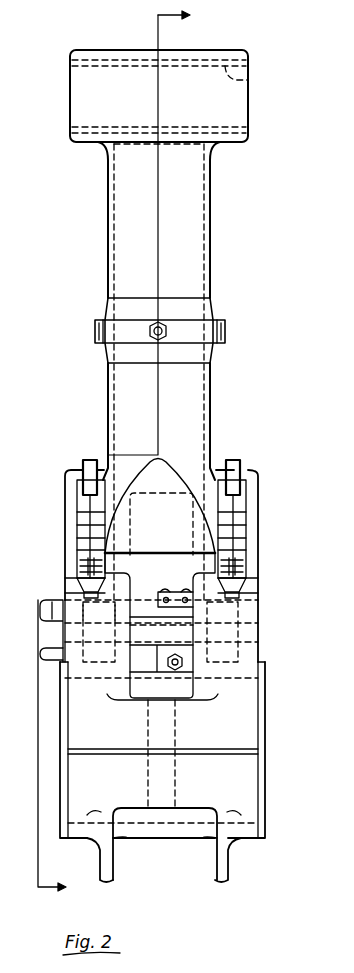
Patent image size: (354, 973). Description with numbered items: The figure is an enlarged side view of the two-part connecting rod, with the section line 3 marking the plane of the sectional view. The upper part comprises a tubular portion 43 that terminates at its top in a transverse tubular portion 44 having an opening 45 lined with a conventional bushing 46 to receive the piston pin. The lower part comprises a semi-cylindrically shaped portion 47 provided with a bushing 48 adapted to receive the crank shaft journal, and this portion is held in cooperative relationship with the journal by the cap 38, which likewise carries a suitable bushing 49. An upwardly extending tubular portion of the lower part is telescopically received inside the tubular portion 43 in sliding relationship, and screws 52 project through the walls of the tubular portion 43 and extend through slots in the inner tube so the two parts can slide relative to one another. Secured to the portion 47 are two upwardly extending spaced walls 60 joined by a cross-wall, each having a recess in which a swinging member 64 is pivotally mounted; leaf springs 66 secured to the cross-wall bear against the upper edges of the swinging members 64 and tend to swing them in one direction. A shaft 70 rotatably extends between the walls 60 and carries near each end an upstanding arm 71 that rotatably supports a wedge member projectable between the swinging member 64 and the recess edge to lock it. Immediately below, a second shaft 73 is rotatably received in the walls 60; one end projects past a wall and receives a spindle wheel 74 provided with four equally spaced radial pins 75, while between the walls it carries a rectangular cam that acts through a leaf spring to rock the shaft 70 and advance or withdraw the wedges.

The section line 3- 3 is at (121, 456).
The cap 38 is at (160, 832).
The tubular portion 43 is at (108, 236).
The transverse tubular portion 44 is at (96, 50).
The opening 45 is at (202, 60).
The bushing 46 is at (249, 79).
The semi-cylindrically shaped portion 47 is at (247, 711).
The bushing 48 is at (262, 680).
The bushing 49 is at (265, 792).
The screws 52 is at (95, 331).
The walls 60 is at (65, 565).
The swinging member 64 is at (86, 505).
The leaf springs 66 is at (86, 463).
The shaft 70 is at (142, 595).
The arm 71 is at (84, 588).
The second shaft 73 is at (250, 641).
The spindle wheel 74 is at (46, 624).
The radial pins 75 is at (46, 657).